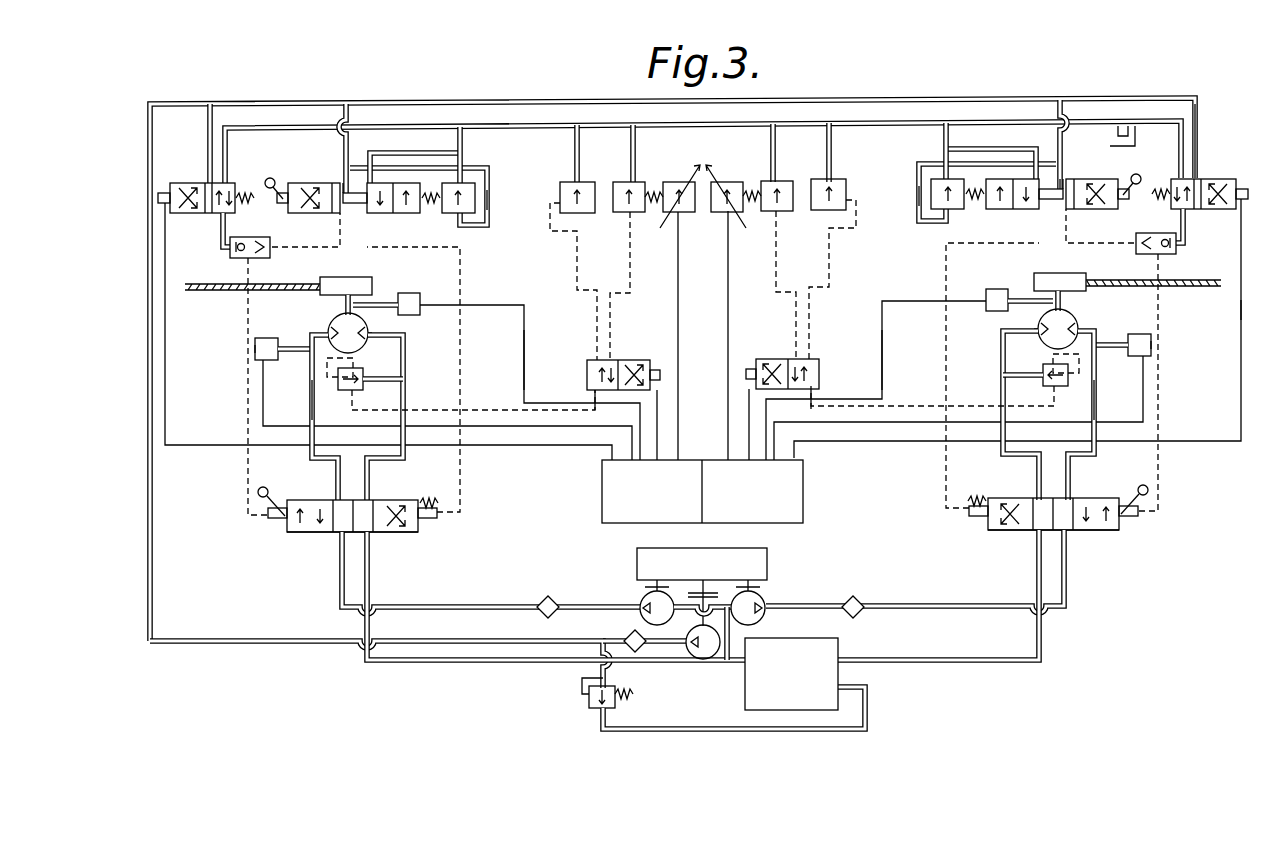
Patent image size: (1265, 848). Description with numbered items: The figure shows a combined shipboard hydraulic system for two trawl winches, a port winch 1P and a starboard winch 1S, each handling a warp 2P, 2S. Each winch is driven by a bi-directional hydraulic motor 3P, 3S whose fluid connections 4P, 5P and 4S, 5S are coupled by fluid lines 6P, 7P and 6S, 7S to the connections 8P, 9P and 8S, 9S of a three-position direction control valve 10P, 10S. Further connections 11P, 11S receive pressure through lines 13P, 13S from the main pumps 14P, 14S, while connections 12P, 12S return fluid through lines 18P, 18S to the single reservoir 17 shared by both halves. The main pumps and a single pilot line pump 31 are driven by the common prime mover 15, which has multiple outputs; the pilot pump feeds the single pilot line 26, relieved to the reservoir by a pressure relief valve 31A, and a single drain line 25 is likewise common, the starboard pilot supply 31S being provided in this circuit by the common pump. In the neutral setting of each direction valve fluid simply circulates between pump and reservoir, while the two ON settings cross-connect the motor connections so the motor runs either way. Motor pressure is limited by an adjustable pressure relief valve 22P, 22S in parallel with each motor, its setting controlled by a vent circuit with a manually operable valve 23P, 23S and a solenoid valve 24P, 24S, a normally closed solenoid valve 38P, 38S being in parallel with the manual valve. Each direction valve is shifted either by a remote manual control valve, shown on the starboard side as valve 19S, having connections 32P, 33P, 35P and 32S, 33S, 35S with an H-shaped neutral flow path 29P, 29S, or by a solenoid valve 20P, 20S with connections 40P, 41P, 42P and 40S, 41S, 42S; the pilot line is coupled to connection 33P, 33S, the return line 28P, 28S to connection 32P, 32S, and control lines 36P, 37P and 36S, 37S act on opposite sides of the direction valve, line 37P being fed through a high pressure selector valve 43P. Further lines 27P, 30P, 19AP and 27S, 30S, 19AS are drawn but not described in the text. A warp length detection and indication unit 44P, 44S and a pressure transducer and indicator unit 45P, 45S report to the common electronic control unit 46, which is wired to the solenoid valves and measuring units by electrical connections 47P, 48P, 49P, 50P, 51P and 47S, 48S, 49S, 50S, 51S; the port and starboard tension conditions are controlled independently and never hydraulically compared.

The pilot line 26 is at (290, 104).
The drain fluid line 25 is at (250, 125).
The electromagnetically operable valve 20P is at (211, 165).
The pilot line 30P is at (346, 115).
The flow path 29P is at (343, 190).
The fluid connection 32P is at (390, 153).
The return line 28P is at (461, 120).
The line 27P is at (488, 168).
The valve loop line 19AP is at (488, 190).
The fluid connection 41P is at (203, 183).
The fluid connection 40P is at (290, 185).
The fluid connection 33P is at (345, 190).
The fluid connection 35P is at (453, 234).
The further connection 42P is at (222, 232).
The high pressure selector valve 43P is at (270, 249).
The control line 37P is at (248, 368).
The electrical connection 47P is at (200, 445).
The trawl wire 2P is at (218, 286).
The winch 1P is at (372, 287).
The bi-directional hydraulic motor 3P is at (330, 325).
The hydraulic fluid connection 4P is at (368, 330).
The warp length detection and indication unit 44P is at (416, 296).
The electrical connection 50P is at (500, 305).
The control line 36P is at (524, 380).
The hydraulic fluid connection 5P is at (328, 338).
The pressure transducer and indicator unit 45P is at (255, 349).
The electrical connection 51P is at (503, 445).
The connection 9P is at (335, 500).
The fluid line 7P is at (310, 398).
The connection 8P is at (370, 500).
The adjustable pressure relief valve 22P is at (363, 378).
The fluid line 6P is at (400, 411).
The fluid connection 11P is at (330, 532).
The fluid connection 12P is at (365, 532).
The three position direction control valve 10P is at (437, 539).
The fluid line 13P is at (340, 592).
The hydraulic line 18P is at (372, 591).
The manually operable valve 23P is at (562, 182).
The solenoid valve 38P is at (678, 182).
The electrical connection 49P is at (678, 340).
The electrical connection 48P is at (657, 388).
The solenoid valve 24P is at (587, 372).
The pump 31S is at (1120, 150).
The pilot line 30S is at (1077, 162).
The fluid connection 32S is at (1036, 150).
The return line 28S is at (1033, 145).
The line 27S is at (918, 164).
The valve loop line 19AS is at (925, 223).
The remote manually operable control valve 19S is at (1068, 181).
The fluid connection 41S is at (1195, 179).
The fluid connection 40S is at (1172, 168).
The fluid connection 33S is at (1062, 210).
The fluid connection 35S is at (1035, 209).
The flow path 29S is at (1055, 196).
The further connection 42S is at (1213, 217).
The control line 37S is at (1158, 374).
The electrical connection 47S is at (1243, 420).
The electromagnetically operable valve 20S is at (1240, 310).
The trawl wire 2S is at (1165, 282).
The winch 1S is at (1082, 274).
The bi-directional hydraulic motor 3S is at (1073, 320).
The hydraulic fluid connection 4S is at (1063, 328).
The warp length detection and indication unit 44S is at (986, 299).
The electrical connection 50S is at (882, 360).
The control line 36S is at (882, 362).
The hydraulic fluid connection 5S is at (1078, 334).
The pressure transducer and indicator unit 45S is at (1151, 346).
The electrical connection 51S is at (863, 442).
The connection 9S is at (1067, 500).
The fluid line 7S is at (1096, 406).
The connection 8S is at (1038, 500).
The adjustable pressure relief valve 22S is at (1043, 376).
The fluid line 6S is at (1003, 366).
The fluid connection 11S is at (1072, 530).
The fluid connection 12S is at (1040, 530).
The three position direction control valve 10S is at (1126, 539).
The fluid line 13S is at (1070, 591).
The hydraulic line 18S is at (1035, 588).
The manually operable valve 23S is at (832, 178).
The solenoid valve 38S is at (727, 182).
The electrical connection 49S is at (728, 342).
The electrical connection 48S is at (750, 462).
The solenoid valve 24S is at (817, 371).
The electronic control unit 46 is at (702, 491).
The prime mover 15 is at (637, 563).
The main hydraulic fluid pump 14P is at (640, 606).
The main hydraulic fluid pump 14S is at (765, 606).
The pilot line pump 31 is at (700, 659).
The pressure relief valve 31A is at (589, 702).
The reservoir 17 is at (791, 674).